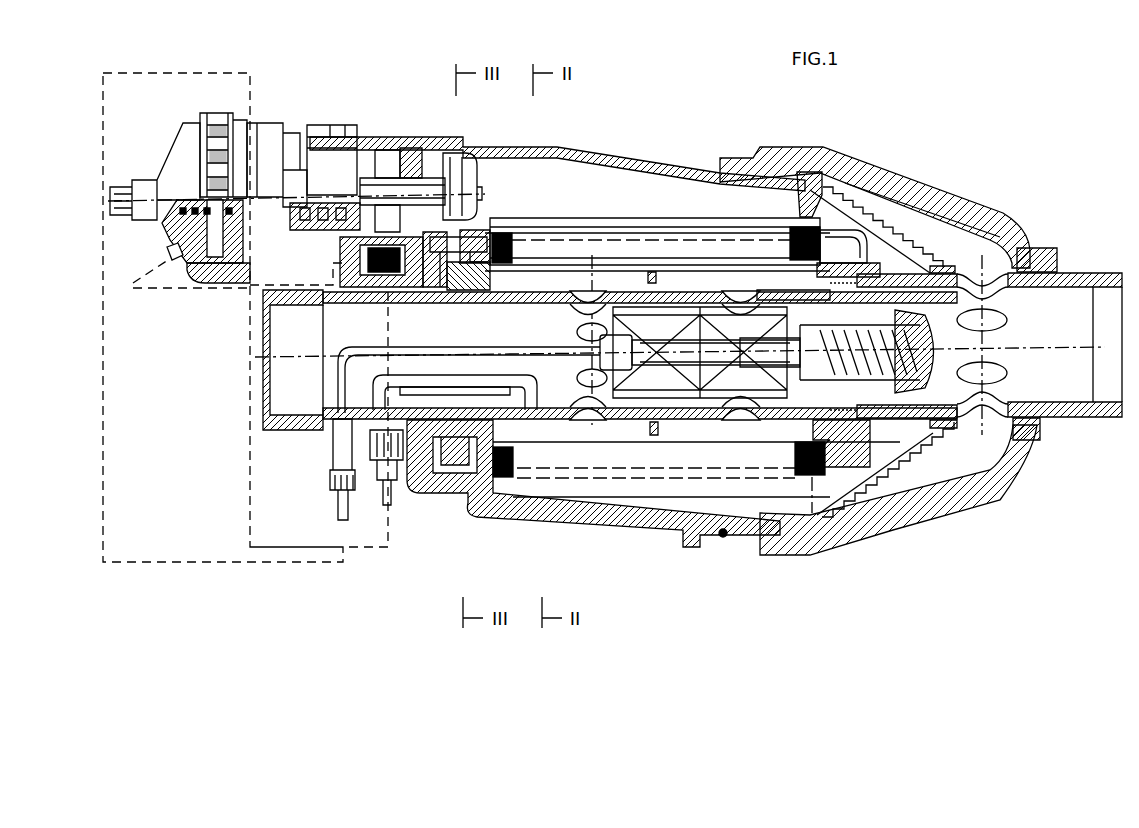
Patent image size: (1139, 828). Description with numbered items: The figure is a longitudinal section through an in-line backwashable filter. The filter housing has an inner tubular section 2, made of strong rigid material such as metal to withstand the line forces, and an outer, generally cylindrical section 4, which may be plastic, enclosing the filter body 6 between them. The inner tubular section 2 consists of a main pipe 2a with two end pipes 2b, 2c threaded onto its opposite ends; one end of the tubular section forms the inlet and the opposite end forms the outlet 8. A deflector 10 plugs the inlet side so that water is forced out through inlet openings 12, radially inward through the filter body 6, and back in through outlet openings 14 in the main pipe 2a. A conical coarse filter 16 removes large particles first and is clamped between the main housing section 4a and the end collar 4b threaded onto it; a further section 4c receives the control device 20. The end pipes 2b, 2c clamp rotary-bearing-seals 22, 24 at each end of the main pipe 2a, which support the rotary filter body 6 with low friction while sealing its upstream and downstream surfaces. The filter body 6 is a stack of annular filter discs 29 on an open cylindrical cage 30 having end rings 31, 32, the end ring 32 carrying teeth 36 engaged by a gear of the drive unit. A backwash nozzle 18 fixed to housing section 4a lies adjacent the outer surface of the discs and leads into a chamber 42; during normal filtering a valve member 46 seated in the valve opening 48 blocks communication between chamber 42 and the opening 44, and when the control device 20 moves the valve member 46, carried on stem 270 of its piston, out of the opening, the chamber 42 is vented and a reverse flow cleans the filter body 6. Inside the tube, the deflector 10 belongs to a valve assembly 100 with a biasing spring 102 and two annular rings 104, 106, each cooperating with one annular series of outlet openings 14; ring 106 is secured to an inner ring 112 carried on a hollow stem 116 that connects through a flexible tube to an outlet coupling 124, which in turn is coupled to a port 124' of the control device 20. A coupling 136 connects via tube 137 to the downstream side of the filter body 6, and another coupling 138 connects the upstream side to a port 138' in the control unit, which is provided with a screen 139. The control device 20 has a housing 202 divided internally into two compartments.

The inner tubular section 2 is at (1106, 250).
The main pipe 2a is at (512, 300).
The end pipe 2b is at (1070, 288).
The end pipe 2c is at (300, 300).
The outer cylindrical housing section 4 is at (631, 150).
The main housing section 4a is at (557, 150).
The end collar 4b is at (935, 183).
The end section of outer housing 4c is at (419, 294).
The filter body 6 is at (675, 218).
The housing outlet 8 is at (272, 350).
The deflector 10 is at (936, 334).
The inlet openings 12 is at (995, 273).
The outlet openings 14 is at (723, 400).
The conical coarse filter 16 is at (899, 230).
The backwash nozzle 18 is at (820, 210).
The control device 20 is at (205, 122).
The rotary-bearing-seal 22 is at (873, 282).
The rotary-bearing-seal 24 is at (447, 294).
The filter discs 29 is at (510, 242).
The cylindrical cage 30 is at (655, 226).
The end ring 31 is at (812, 268).
The end ring 32 is at (462, 245).
The teeth 36 is at (467, 237).
The chamber 42 is at (564, 190).
The opening 44 is at (390, 170).
The valve member 46 is at (443, 170).
The valve opening 48 is at (420, 170).
The valve assembly 100 is at (615, 318).
The biasing spring 102 is at (918, 373).
The annular ring 104 is at (757, 298).
The annular ring 106 is at (625, 297).
The inner ring 112 is at (665, 340).
The stem 116 is at (807, 380).
The outlet coupling 124 is at (318, 469).
The port 124' is at (277, 147).
The coupling 136 is at (397, 480).
The tube 137 is at (252, 407).
The coupling 138 is at (447, 355).
The port 138' is at (195, 289).
The screen 139 is at (170, 250).
The housing 202 is at (178, 168).
The stem 270 is at (383, 190).